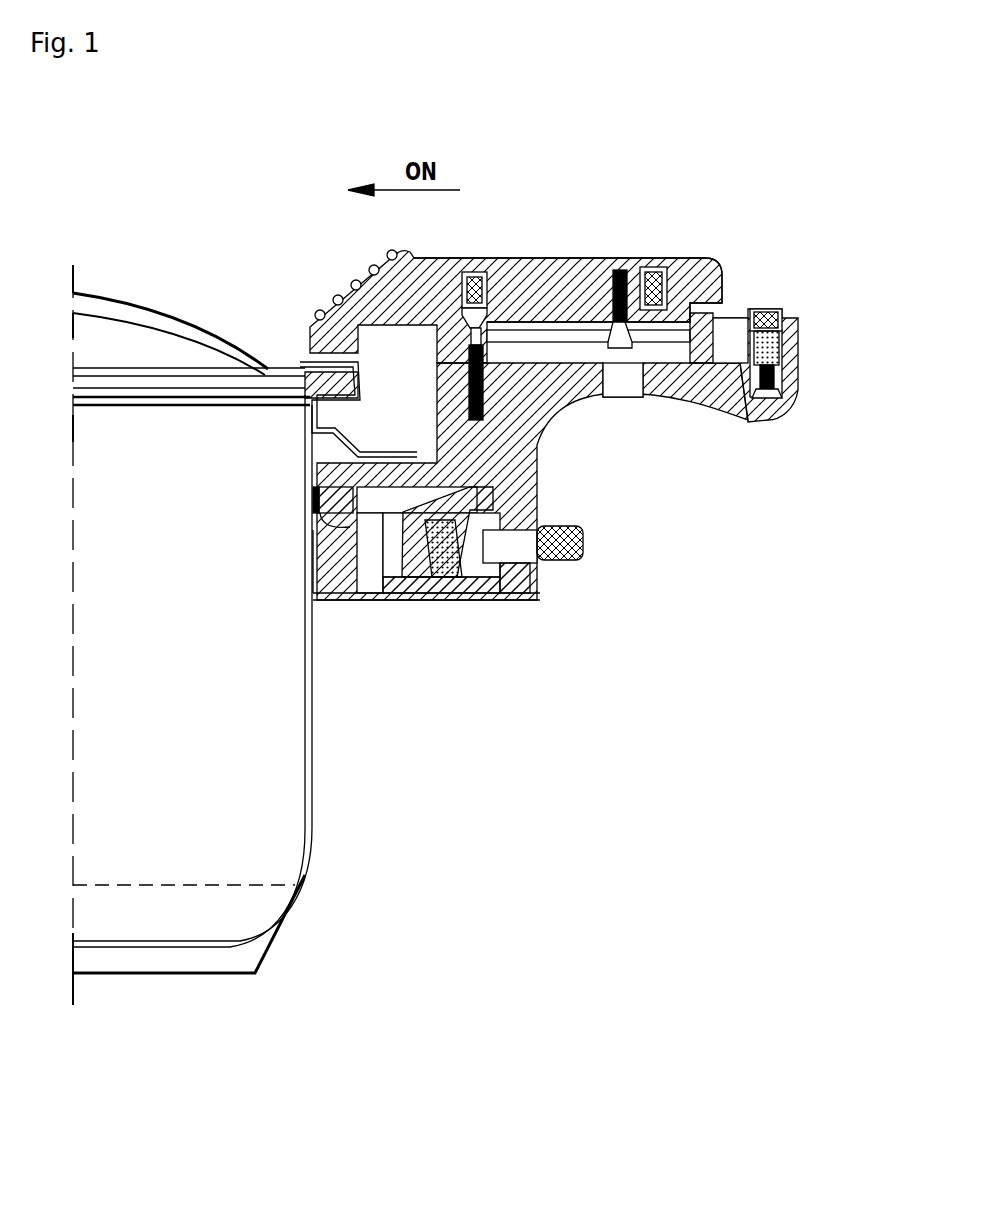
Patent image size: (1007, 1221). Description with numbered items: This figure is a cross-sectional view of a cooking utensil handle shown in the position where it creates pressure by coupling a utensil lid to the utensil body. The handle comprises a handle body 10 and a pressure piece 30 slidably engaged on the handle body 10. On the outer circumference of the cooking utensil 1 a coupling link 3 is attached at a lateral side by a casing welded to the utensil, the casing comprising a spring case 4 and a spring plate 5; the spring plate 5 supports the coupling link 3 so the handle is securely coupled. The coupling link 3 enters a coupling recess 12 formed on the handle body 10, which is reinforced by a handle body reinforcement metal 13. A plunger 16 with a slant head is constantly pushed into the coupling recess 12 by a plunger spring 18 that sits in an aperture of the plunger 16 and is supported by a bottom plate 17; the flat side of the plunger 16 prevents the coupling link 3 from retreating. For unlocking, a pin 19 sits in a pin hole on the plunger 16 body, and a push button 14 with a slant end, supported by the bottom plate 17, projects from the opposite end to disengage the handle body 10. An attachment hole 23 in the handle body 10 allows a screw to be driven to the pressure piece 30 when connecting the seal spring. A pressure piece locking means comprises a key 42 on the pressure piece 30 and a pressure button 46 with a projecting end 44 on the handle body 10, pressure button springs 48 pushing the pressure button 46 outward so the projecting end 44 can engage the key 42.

The cooking utensil 1 is at (314, 768).
The coupling link 3 is at (537, 488).
The spring case 4 is at (318, 432).
The spring plate 5 is at (318, 488).
The handle body 10 is at (735, 408).
The coupling recess 12 is at (425, 495).
The handle body reinforcement metal 13 is at (306, 358).
The push button 14 is at (585, 540).
The plunger 16 is at (523, 585).
The bottom plate 17 is at (483, 600).
The plunger spring 18 is at (418, 600).
The pin 19 is at (398, 600).
The attachment hole 23 is at (617, 398).
The pressure piece 30 is at (511, 275).
The key 42 is at (643, 264).
The projecting end 44 is at (780, 350).
The pressure button 46 is at (760, 315).
The pressure button springs 48 is at (778, 375).